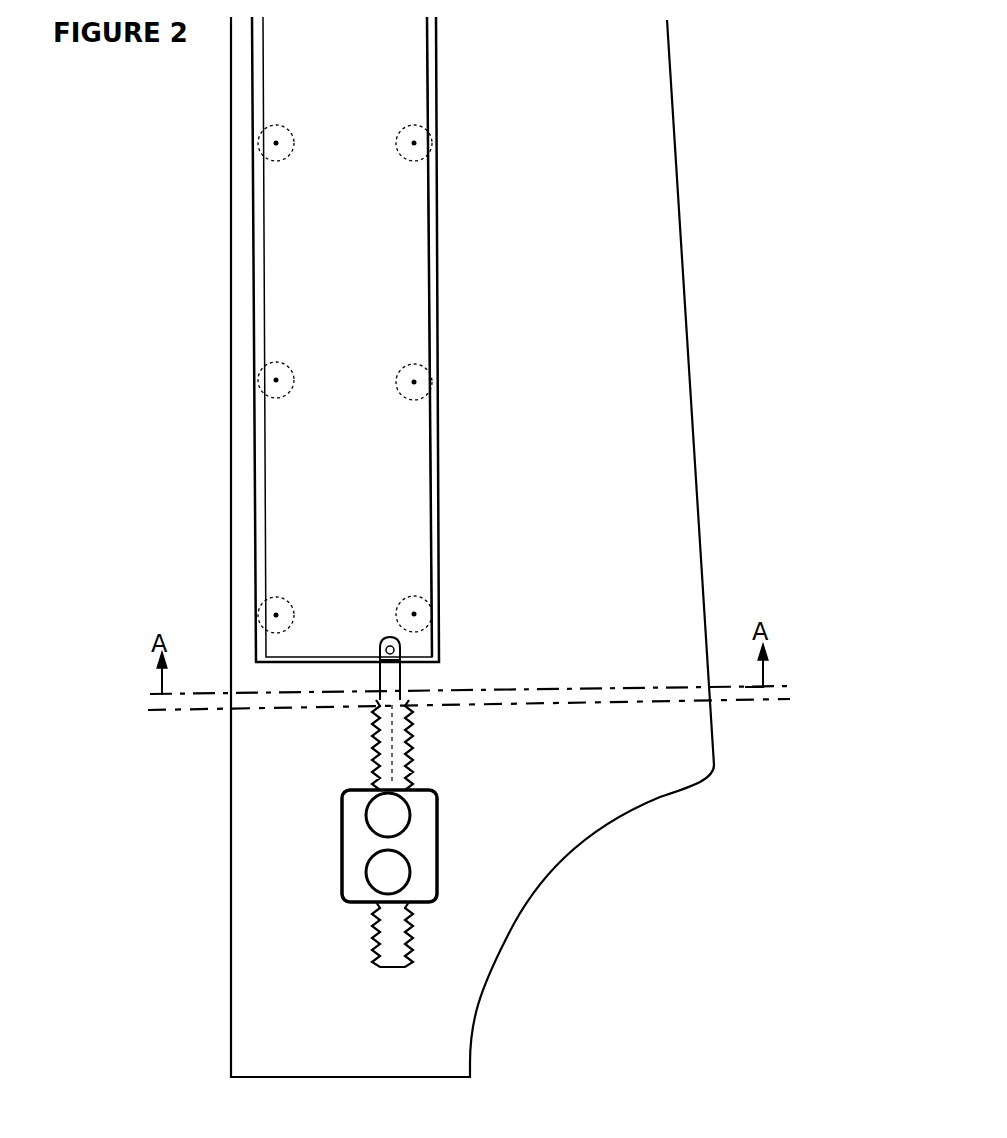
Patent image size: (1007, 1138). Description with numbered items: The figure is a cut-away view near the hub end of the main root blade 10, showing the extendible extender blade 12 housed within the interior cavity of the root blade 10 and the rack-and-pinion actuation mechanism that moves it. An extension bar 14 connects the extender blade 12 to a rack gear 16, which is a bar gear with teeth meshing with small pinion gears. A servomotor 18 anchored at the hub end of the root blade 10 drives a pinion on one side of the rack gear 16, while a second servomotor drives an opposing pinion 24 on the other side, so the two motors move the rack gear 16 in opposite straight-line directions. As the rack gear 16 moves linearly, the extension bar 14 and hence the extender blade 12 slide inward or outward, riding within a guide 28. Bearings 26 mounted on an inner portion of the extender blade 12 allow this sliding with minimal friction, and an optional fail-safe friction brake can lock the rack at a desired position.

The root blade 10 is at (675, 138).
The extender blade 12 is at (263, 277).
The extension bar 14 is at (401, 680).
The rack gear 16 is at (378, 746).
The servomotor 18 is at (342, 825).
The pinion 24 is at (412, 808).
The bearings 26 is at (258, 610).
The guide 28 is at (440, 513).